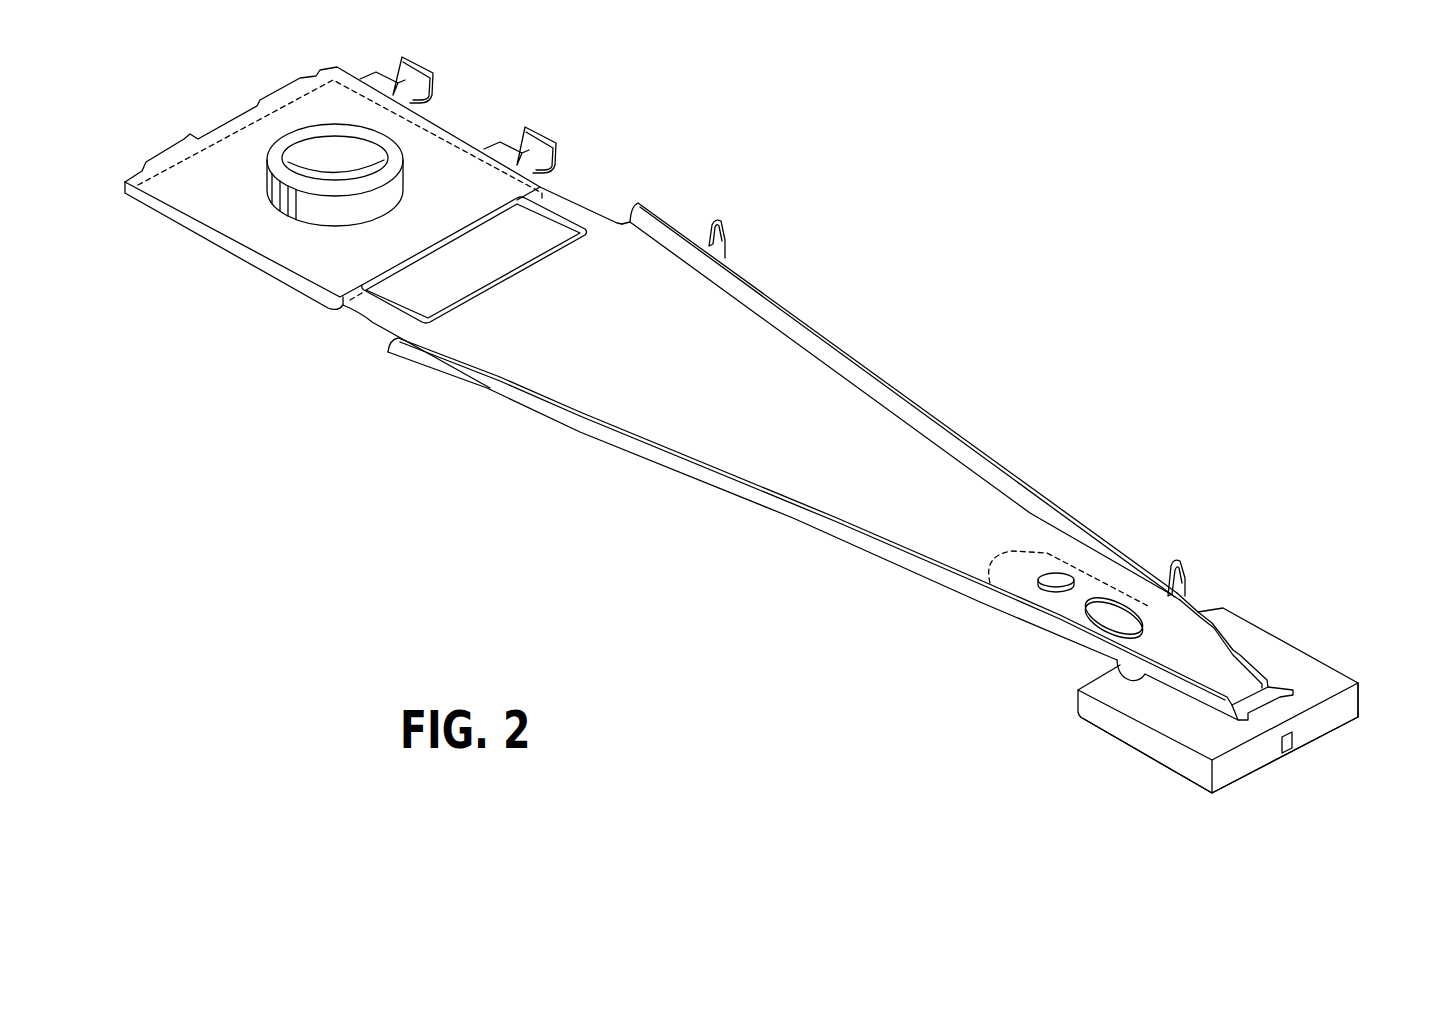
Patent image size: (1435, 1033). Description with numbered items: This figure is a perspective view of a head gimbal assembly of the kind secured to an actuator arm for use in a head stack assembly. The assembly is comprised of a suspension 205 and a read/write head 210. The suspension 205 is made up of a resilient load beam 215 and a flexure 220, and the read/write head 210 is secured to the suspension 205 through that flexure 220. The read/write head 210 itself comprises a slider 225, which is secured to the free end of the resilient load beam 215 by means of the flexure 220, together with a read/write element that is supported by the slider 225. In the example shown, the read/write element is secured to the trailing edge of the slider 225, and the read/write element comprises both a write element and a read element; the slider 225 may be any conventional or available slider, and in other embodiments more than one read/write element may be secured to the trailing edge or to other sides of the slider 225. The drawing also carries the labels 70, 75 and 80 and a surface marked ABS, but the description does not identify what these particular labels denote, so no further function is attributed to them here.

The head suspension assembly 70 is at (696, 388).
The load beam 75 is at (828, 461).
The slider 80 is at (1256, 682).
The suspension 205 is at (847, 423).
The read/write head 210 is at (1108, 666).
The resilient load beam 215 is at (1285, 637).
The flexure 220 is at (1288, 750).
The slider 225 is at (1360, 710).
The air bearing surface ABS is at (1237, 783).